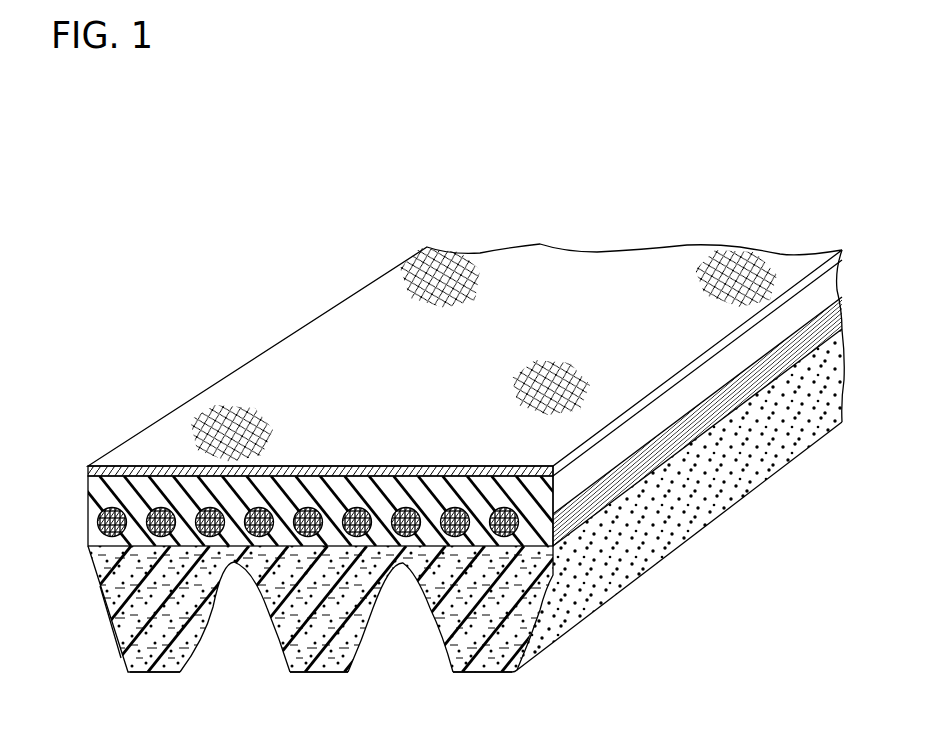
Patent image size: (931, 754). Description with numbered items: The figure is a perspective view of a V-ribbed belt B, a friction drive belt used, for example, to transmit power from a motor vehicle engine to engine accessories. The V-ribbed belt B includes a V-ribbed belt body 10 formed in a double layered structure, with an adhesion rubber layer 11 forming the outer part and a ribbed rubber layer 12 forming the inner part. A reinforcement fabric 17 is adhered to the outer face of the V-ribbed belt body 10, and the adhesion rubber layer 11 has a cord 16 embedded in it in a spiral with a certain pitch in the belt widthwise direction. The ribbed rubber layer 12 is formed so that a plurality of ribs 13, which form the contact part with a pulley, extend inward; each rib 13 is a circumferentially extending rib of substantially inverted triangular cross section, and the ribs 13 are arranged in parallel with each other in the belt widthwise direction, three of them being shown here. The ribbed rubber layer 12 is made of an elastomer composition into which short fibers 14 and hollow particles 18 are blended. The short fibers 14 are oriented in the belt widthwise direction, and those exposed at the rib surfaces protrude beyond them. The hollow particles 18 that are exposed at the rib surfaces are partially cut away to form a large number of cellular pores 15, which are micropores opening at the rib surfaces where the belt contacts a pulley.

The V-ribbed belt B is at (402, 203).
The V-ribbed belt body 10 is at (614, 597).
The adhesion rubber layer 11 is at (122, 479).
The ribbed rubber layer 12 is at (93, 561).
The rib 13 is at (158, 673).
The short fibers 14 is at (290, 672).
The cellular pores 15 is at (267, 608).
The cord 16 is at (98, 521).
The reinforcement fabric 17 is at (241, 367).
The hollow particles 18 is at (136, 653).